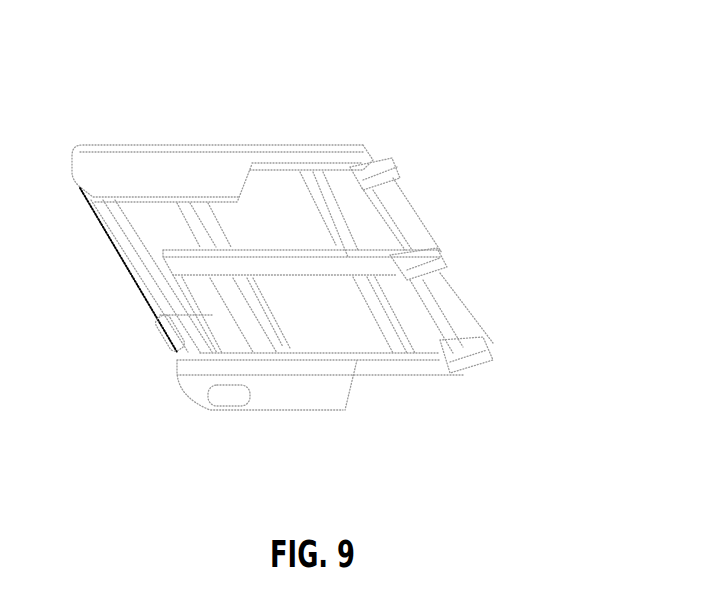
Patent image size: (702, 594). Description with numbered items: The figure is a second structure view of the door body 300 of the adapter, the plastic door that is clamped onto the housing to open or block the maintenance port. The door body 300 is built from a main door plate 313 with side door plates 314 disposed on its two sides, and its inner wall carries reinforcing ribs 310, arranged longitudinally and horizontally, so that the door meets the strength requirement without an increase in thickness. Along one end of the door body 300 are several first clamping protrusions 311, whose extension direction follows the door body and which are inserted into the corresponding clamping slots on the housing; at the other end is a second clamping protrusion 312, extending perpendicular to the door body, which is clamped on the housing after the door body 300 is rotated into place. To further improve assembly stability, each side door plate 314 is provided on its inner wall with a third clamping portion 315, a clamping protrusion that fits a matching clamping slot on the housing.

The door body 300 is at (331, 107).
The reinforcing rib 310 is at (307, 267).
The first clamping protrusion 311 is at (397, 161).
The second clamping protrusion 312 is at (128, 266).
The main door plate 313 is at (157, 323).
The side door plate 314 is at (154, 172).
The third clamping portion 315 is at (214, 406).